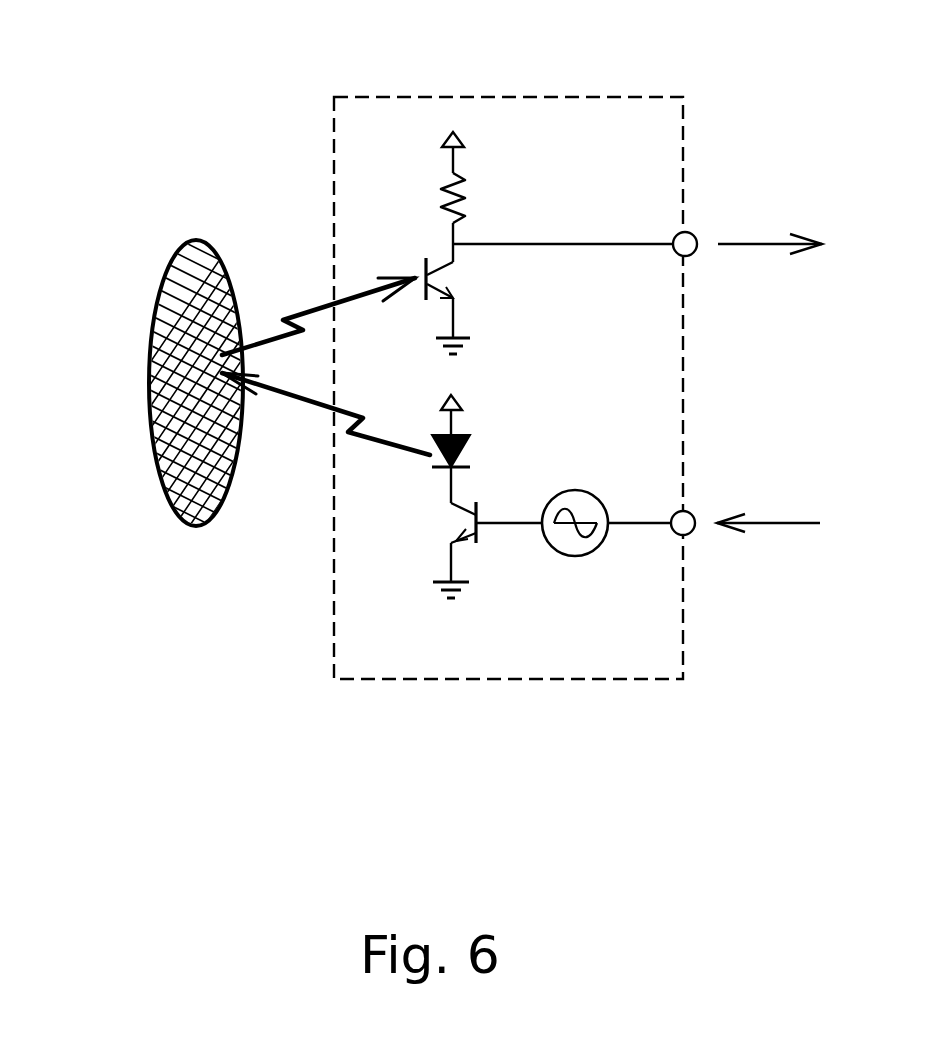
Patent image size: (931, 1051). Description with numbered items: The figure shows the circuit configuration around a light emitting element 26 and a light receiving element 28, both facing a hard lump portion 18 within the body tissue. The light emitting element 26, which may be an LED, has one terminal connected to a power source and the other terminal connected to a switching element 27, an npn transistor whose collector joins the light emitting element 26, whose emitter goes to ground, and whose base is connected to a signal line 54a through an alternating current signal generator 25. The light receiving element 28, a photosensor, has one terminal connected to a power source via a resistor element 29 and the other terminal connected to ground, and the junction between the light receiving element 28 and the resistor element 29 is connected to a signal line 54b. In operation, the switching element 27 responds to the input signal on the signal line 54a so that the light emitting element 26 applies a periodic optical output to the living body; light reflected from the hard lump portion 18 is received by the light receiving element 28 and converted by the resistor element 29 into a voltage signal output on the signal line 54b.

The hard lump portion 18 is at (152, 420).
The alternating current signal generator 25 is at (590, 552).
The light emitting element 26 is at (437, 455).
The switching element 27 is at (465, 548).
The light receiving element 28 is at (420, 266).
The resistor element 29 is at (466, 196).
The signal line 54a is at (775, 523).
The signal line 54b is at (757, 244).